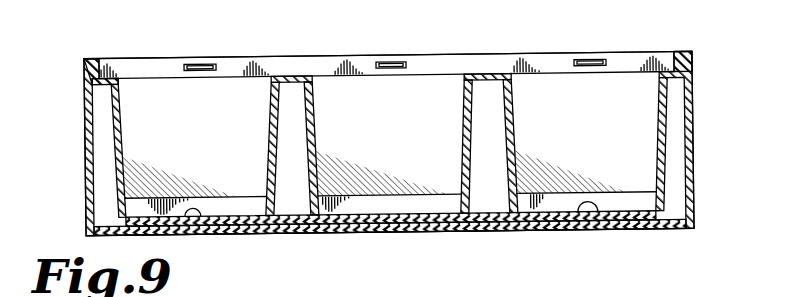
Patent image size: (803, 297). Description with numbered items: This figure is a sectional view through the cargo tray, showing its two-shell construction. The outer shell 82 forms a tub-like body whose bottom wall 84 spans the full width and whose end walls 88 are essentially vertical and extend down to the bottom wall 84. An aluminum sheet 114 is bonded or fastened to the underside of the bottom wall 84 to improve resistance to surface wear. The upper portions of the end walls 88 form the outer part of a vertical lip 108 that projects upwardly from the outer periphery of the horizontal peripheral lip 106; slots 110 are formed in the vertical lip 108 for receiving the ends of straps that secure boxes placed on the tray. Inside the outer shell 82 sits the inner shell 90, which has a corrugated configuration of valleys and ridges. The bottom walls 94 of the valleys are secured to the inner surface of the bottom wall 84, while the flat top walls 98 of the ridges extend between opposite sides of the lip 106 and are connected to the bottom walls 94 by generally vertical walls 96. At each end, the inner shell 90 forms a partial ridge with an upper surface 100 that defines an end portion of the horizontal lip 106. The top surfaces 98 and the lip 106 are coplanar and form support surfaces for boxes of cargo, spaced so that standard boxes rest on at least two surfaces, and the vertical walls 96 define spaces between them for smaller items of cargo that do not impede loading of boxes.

The outer shell 82 is at (74, 103).
The bottom wall 84 is at (507, 229).
The end walls 88 is at (692, 146).
The inner shell 90 is at (106, 160).
The bottom walls of the valleys 94 is at (190, 210).
The generally vertical walls 96 is at (122, 99).
The flat top walls of the ridges 98 is at (288, 71).
The upper surface of partial ridge 100 is at (115, 55).
The horizontal peripheral lip 106 is at (651, 39).
The vertical lip 108 is at (455, 63).
The slots 110 is at (388, 62).
The aluminum sheet 114 is at (293, 232).